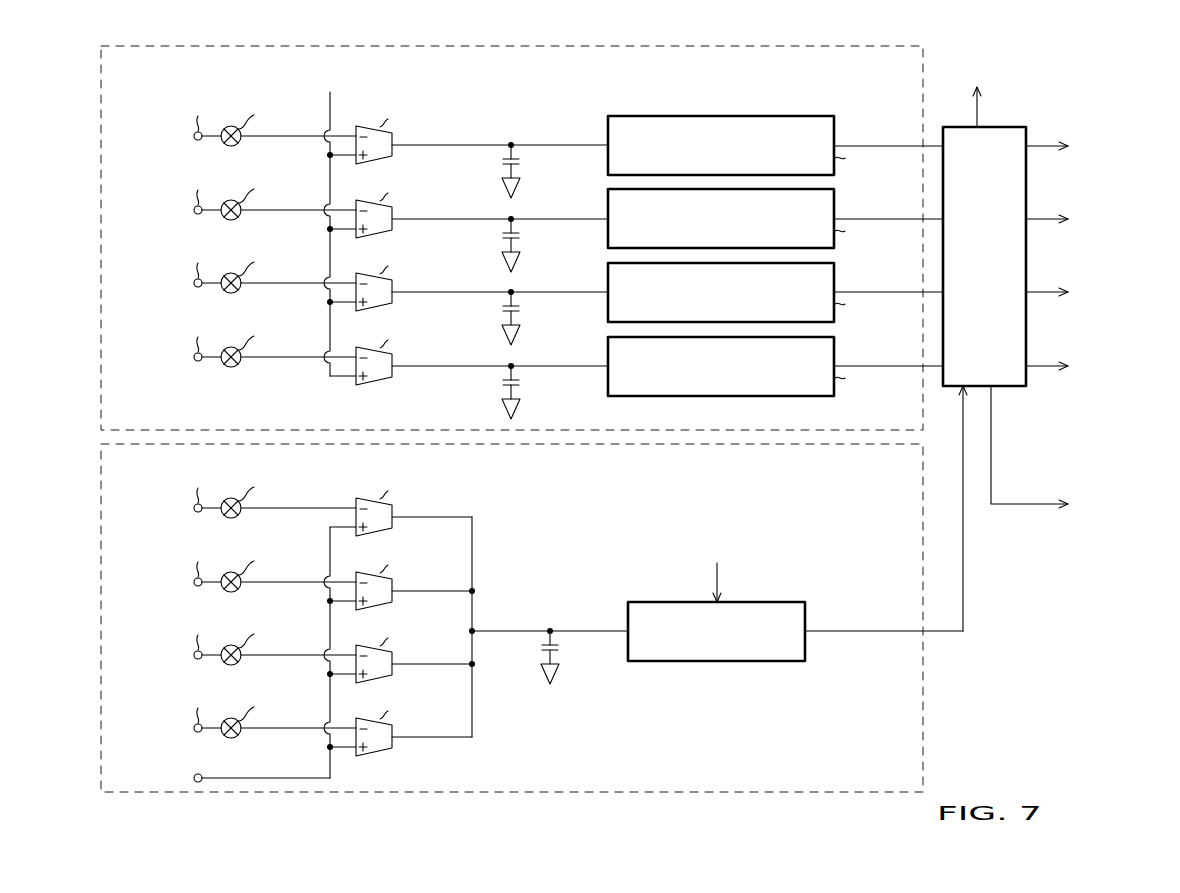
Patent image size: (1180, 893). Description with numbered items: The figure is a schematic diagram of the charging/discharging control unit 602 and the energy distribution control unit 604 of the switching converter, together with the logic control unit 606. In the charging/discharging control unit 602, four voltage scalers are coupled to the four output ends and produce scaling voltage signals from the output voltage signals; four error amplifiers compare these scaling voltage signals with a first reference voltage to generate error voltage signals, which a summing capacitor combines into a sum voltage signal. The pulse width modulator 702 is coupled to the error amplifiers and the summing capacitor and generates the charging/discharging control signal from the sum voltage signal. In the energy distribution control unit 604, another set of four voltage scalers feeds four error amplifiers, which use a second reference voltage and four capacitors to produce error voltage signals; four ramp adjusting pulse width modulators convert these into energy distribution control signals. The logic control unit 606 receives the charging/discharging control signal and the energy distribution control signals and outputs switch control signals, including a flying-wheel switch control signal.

The charging/discharging control unit 602 is at (101, 553).
The energy distribution control unit 604 is at (101, 253).
The logic control unit 606 is at (1003, 126).
The pulse width modulator 702 is at (806, 645).